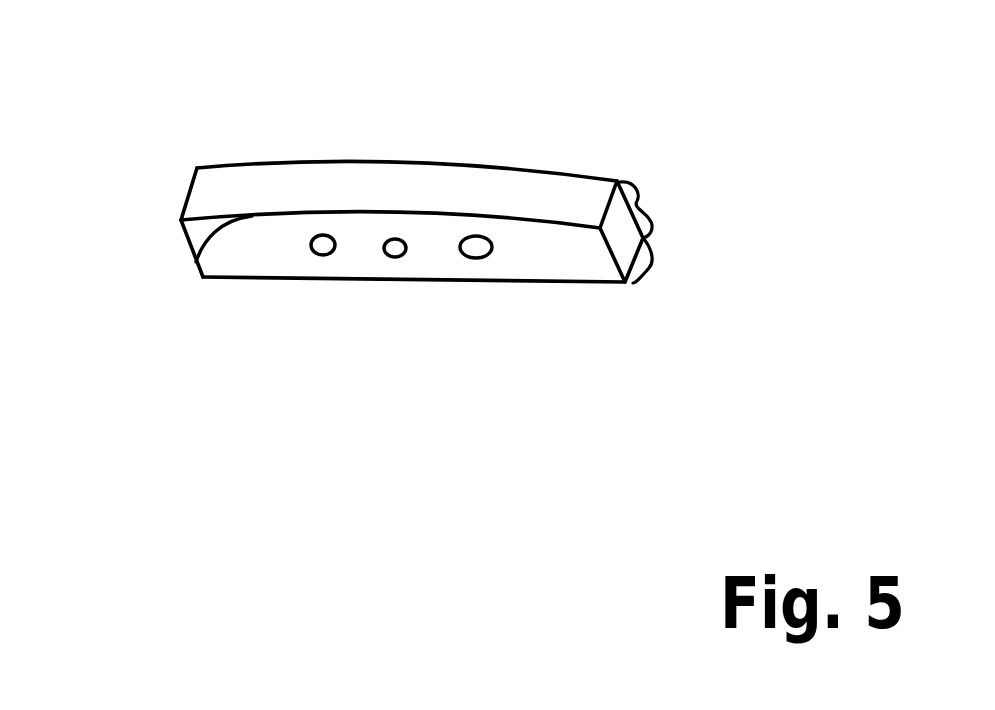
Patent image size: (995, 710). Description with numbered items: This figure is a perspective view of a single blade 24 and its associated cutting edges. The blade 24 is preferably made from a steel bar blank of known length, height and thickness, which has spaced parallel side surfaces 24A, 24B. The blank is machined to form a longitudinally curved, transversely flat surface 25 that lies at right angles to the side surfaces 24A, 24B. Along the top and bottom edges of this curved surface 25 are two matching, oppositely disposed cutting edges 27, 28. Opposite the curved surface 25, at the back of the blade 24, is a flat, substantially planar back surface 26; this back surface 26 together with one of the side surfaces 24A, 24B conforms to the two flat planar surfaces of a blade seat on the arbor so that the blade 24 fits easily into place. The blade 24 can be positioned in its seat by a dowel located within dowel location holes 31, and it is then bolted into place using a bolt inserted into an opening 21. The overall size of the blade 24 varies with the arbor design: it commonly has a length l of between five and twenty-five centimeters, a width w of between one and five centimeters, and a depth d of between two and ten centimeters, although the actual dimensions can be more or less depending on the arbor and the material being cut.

The blade 24 is at (379, 222).
The side surface 24A is at (353, 265).
The side surface 24B is at (494, 134).
The opening 21 is at (395, 258).
The longitudinally curved transversely flat surface 25 is at (557, 188).
The back surface 26 is at (567, 296).
The cutting edge 27 is at (267, 163).
The cutting edge 28 is at (196, 262).
The dowel location hole 31 is at (482, 259).
The depth d is at (649, 204).
The width w is at (650, 262).
The length l is at (578, 433).